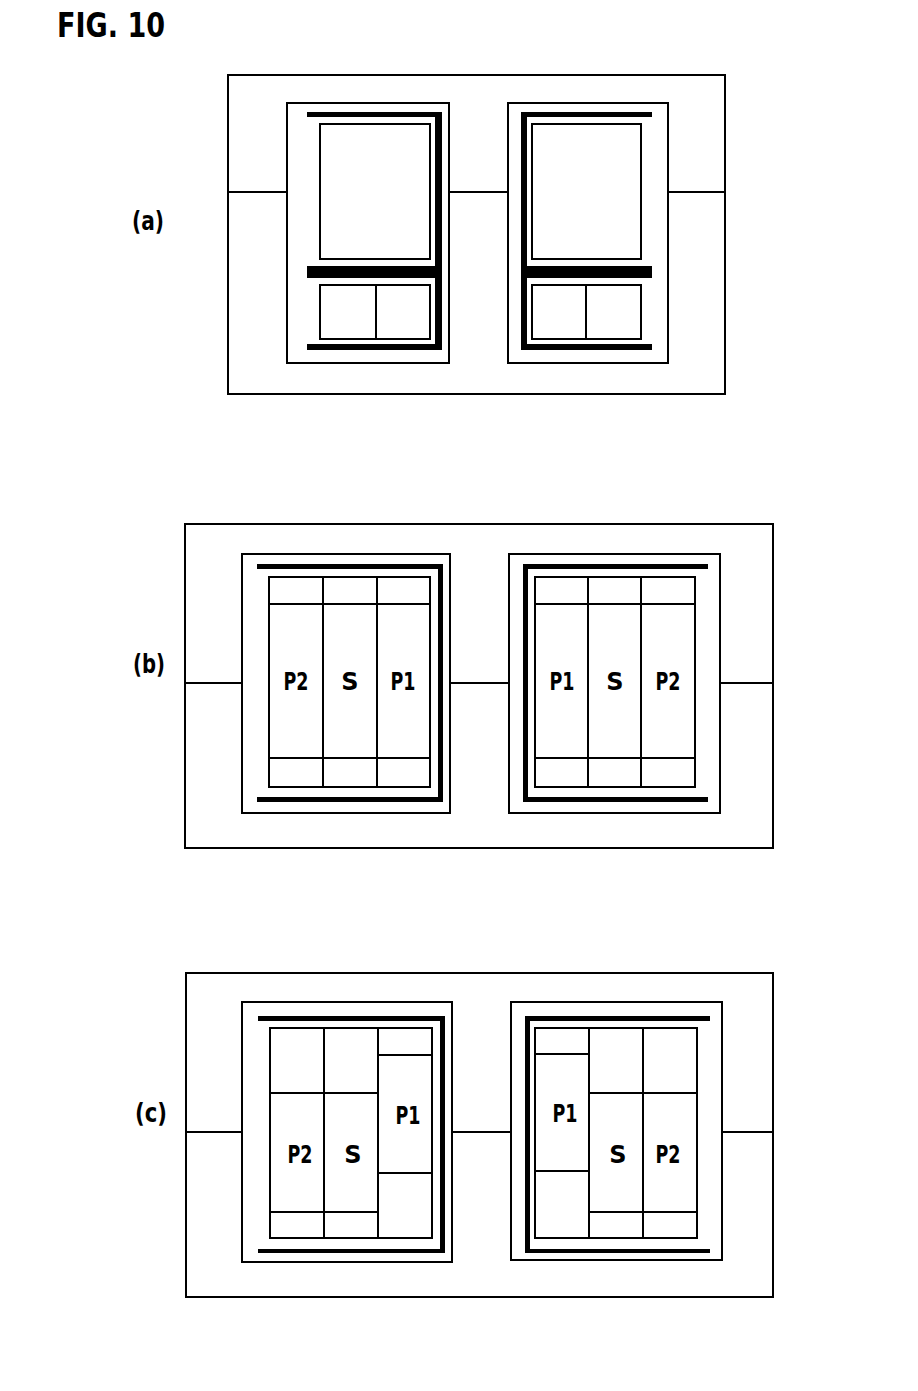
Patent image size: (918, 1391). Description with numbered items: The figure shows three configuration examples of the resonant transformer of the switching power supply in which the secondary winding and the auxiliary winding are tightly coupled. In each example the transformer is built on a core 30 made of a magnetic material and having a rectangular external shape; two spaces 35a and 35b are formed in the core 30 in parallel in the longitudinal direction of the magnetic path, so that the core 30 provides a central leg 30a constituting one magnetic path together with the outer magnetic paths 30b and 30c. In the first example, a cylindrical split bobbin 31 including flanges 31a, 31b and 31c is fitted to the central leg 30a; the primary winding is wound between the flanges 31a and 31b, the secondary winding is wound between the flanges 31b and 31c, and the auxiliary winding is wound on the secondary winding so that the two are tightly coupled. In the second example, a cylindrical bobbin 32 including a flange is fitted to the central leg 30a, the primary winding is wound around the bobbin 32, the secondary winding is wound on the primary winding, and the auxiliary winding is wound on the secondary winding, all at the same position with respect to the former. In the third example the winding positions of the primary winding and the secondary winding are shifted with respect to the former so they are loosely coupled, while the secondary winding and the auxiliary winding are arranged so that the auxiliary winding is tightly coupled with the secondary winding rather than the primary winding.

The core 30 is at (488, 113).
The central leg 30a is at (470, 127).
The magnetic path 30b is at (258, 120).
The magnetic path 30c is at (693, 100).
The split bobbin 31 is at (660, 200).
The flange 31a is at (654, 113).
The flange 31b is at (642, 262).
The flange 31c is at (642, 353).
The bobbin 32 is at (705, 560).
The space 35a is at (307, 163).
The space 35b is at (658, 164).